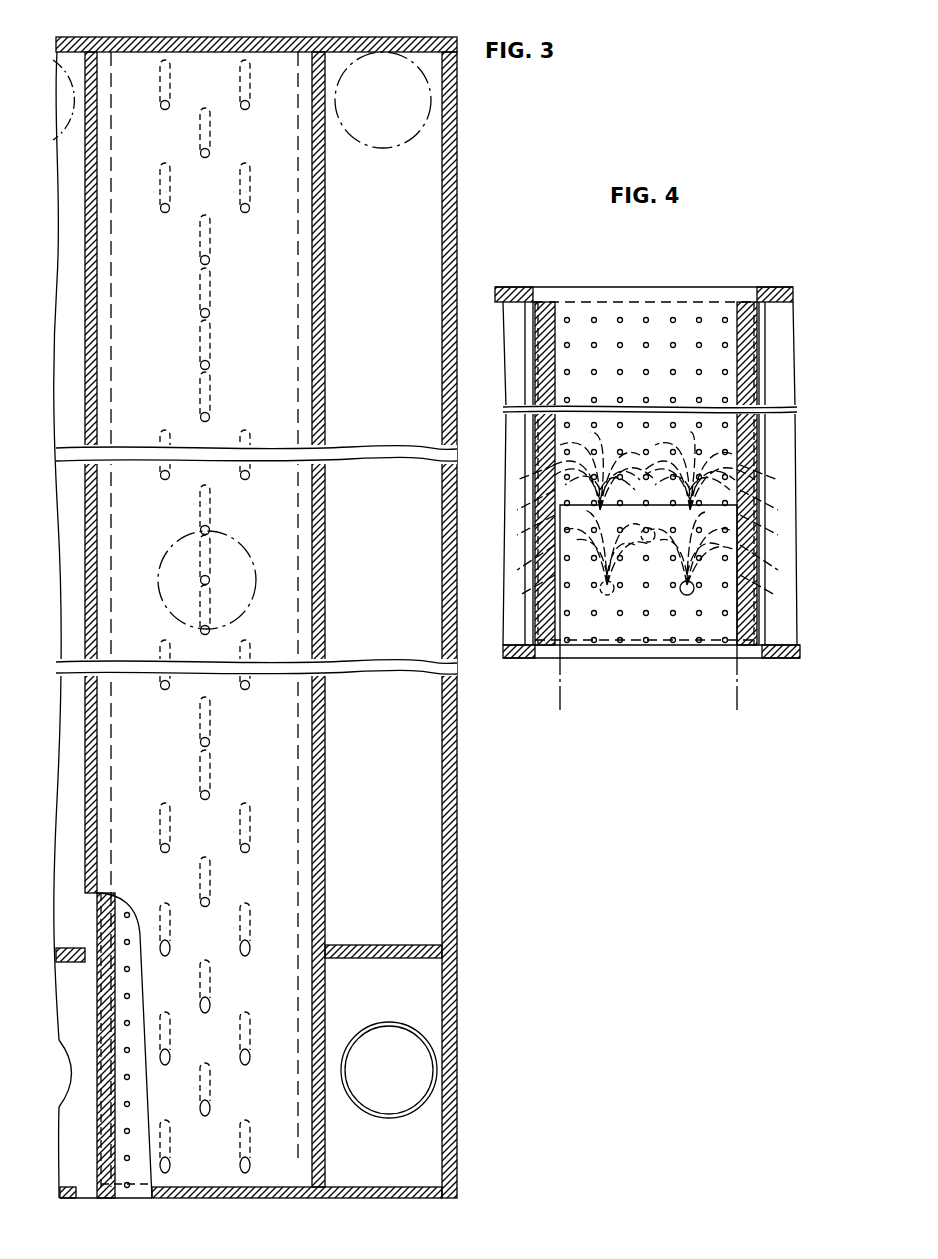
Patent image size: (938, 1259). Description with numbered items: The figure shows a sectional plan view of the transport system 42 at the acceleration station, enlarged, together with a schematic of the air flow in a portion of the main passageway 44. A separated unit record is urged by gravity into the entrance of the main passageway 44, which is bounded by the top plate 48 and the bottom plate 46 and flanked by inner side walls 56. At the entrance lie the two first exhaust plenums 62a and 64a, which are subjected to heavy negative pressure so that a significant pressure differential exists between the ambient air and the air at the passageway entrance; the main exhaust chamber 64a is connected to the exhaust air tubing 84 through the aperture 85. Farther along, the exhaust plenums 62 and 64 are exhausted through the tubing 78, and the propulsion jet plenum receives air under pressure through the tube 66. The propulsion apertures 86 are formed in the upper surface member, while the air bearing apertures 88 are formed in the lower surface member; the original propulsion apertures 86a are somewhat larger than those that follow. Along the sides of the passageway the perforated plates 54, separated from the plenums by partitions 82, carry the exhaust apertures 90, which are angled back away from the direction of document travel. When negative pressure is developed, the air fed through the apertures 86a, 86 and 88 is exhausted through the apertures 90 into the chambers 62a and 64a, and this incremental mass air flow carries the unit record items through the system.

In FIG. 3, the heat exchanger housing assembly 42 is at (270, 620).
In FIG. 4, the heat exchanger housing assembly 42 is at (651, 460).
In FIG. 3, the main passageway 44 is at (133, 987).
In FIG. 3, the bottom plate 46 is at (133, 1198).
In FIG. 4, the bottom plate 46 is at (630, 660).
In FIG. 3, the top plate 48 is at (115, 38).
In FIG. 4, the top plate 48 is at (632, 287).
In FIG. 3, the perforated side plate 54 is at (98, 997).
In FIG. 4, the perforated side plate 54 is at (540, 432).
In FIG. 3, the inner side wall 56 is at (92, 318).
In FIG. 3, the exhaust plenum 62 is at (75, 585).
In FIG. 4, the exhaust plenum 62 is at (512, 330).
In FIG. 3, the first exhaust plenum 62a is at (72, 1167).
In FIG. 4, the first exhaust plenum 62a is at (512, 592).
In FIG. 3, the exhaust plenum 64 is at (402, 594).
In FIG. 4, the exhaust plenum 64 is at (780, 343).
In FIG. 3, the main exhaust chamber 64a is at (412, 1004).
In FIG. 4, the main exhaust chamber 64a is at (795, 618).
In FIG. 3, the tube 66 is at (248, 556).
In FIG. 3, the tubing 78 is at (58, 87).
In FIG. 3, the partition 82 is at (70, 948).
In FIG. 3, the exhaust air tubing 84 is at (68, 1097).
In FIG. 3, the aperture 85 is at (418, 1112).
In FIG. 3, the propulsion aperture 86 is at (166, 210).
In FIG. 4, the propulsion aperture 86 is at (687, 597).
In FIG. 3, the aperture 86a is at (250, 958).
In FIG. 3, the air bearing aperture 88 is at (128, 1128).
In FIG. 4, the air bearing aperture 88 is at (724, 318).
In FIG. 3, the aperture 90 is at (98, 1012).
In FIG. 4, the aperture 90 is at (536, 362).